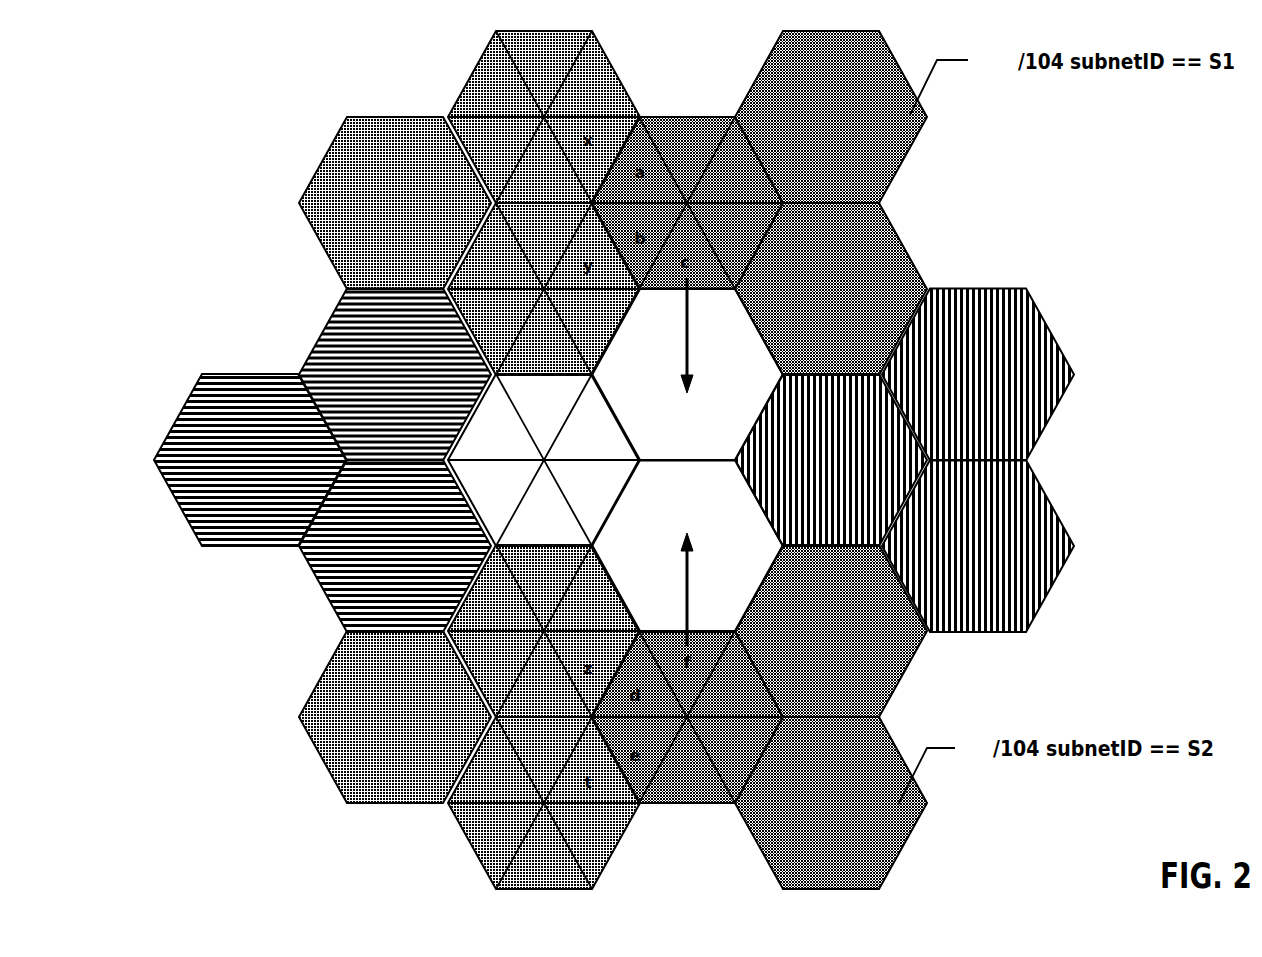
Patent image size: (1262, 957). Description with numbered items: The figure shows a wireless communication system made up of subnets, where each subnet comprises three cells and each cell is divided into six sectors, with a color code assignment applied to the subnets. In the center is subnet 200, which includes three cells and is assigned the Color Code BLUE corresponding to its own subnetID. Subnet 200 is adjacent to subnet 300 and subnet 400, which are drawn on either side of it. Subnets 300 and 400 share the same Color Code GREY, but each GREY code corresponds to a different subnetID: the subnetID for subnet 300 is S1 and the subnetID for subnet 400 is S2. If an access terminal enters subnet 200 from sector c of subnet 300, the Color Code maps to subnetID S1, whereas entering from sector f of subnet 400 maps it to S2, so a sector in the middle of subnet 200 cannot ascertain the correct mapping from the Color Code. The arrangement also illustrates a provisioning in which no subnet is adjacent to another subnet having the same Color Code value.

The subnet 200 is at (678, 500).
The subnet 300 is at (820, 82).
The subnet 400 is at (797, 626).